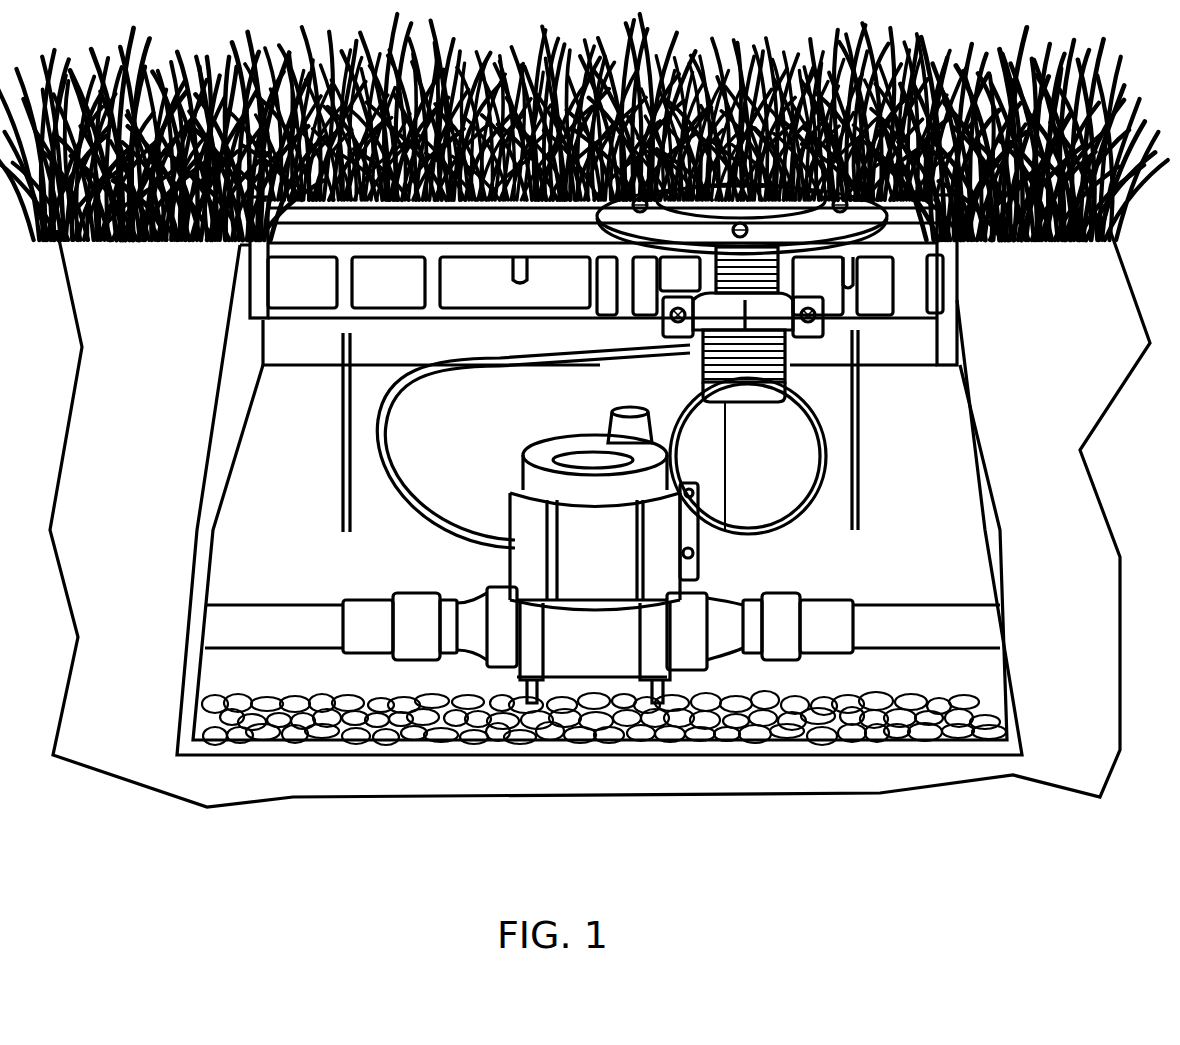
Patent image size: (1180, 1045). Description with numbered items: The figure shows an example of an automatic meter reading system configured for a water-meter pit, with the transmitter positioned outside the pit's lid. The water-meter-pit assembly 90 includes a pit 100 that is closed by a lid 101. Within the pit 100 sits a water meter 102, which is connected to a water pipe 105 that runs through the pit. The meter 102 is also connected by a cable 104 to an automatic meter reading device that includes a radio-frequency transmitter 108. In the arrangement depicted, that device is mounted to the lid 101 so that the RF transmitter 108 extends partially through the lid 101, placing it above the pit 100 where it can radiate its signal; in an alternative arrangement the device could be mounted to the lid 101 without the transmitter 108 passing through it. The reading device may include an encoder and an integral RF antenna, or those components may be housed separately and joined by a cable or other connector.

The water-meter-pit assembly 90 is at (979, 294).
The pit 100 is at (1015, 571).
The lid 101 is at (280, 285).
The water meter 102 is at (525, 478).
The cable 104 is at (378, 408).
The water pipe 105 is at (250, 627).
The radio-frequency (RF) transmitter 108 is at (745, 205).